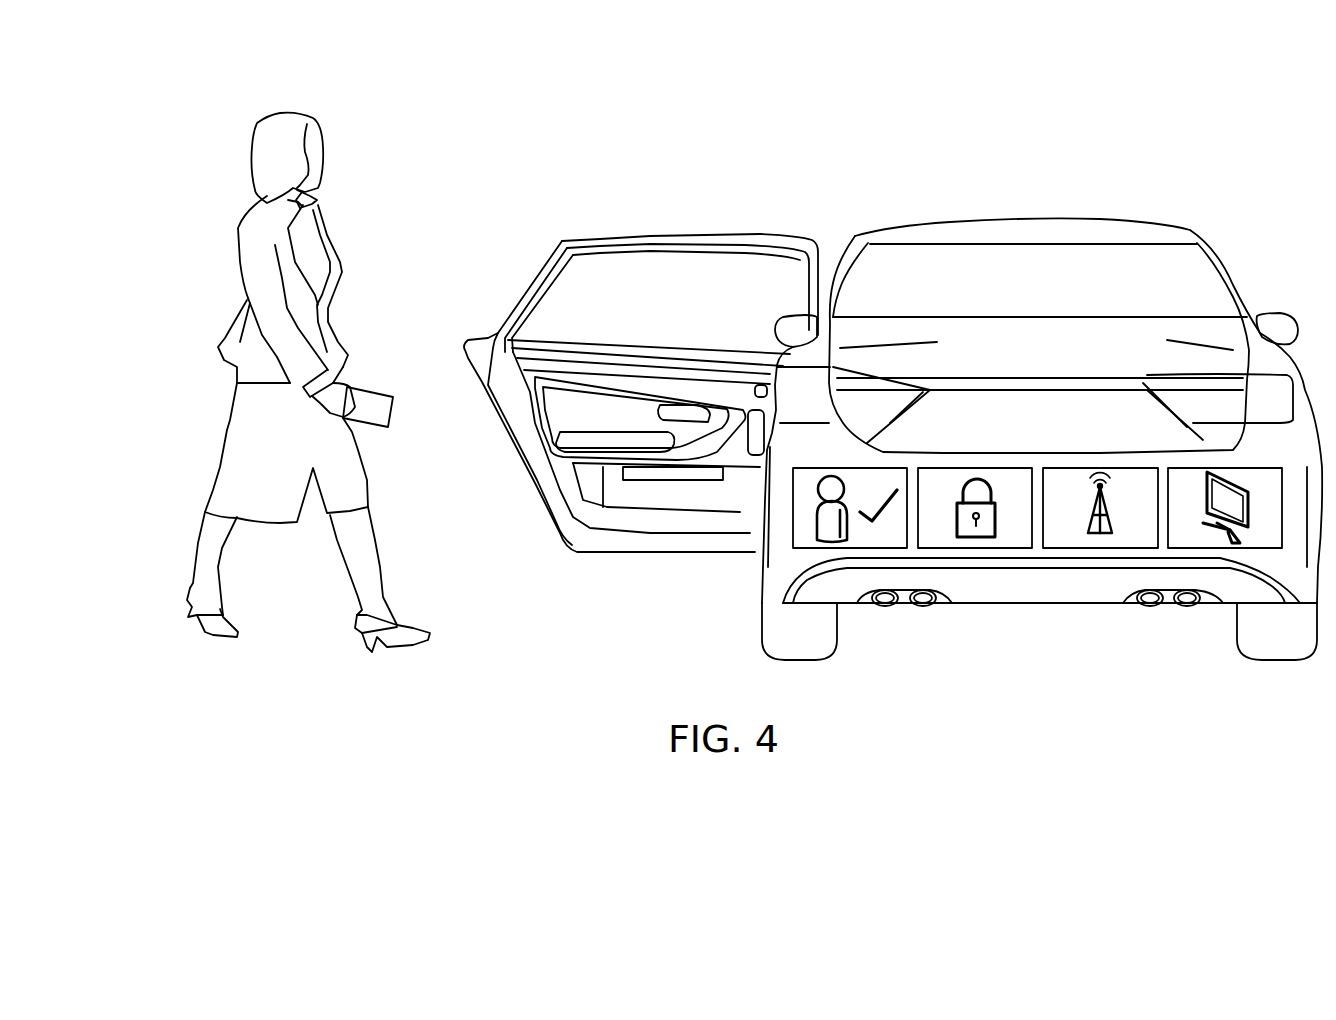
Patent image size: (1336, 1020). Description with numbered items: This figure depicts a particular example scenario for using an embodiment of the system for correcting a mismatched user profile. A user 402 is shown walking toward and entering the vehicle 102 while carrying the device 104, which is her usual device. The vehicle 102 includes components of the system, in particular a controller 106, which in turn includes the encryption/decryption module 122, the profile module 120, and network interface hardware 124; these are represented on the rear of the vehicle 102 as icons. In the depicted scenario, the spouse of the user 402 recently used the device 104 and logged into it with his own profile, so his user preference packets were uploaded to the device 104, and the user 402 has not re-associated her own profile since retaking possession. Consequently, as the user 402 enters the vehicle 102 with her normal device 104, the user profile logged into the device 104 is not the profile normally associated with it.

The user 402 is at (210, 166).
The device 104 is at (370, 388).
The vehicle 102 is at (1037, 219).
The profile module 120 is at (847, 548).
The encryption/decryption module 122 is at (979, 468).
The network interface hardware 124 is at (1100, 468).
The controller 106 is at (1230, 548).